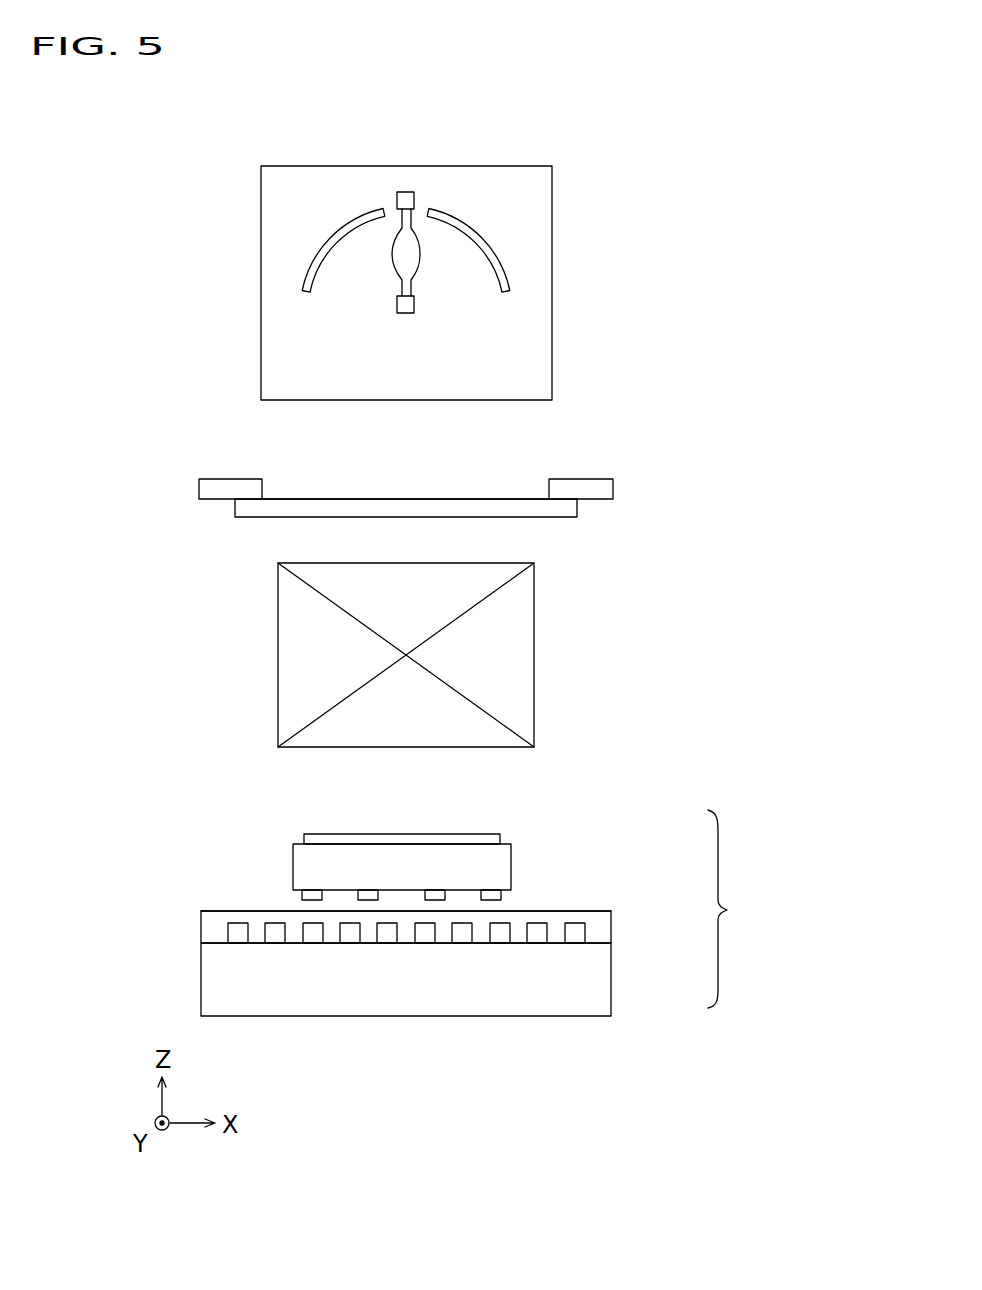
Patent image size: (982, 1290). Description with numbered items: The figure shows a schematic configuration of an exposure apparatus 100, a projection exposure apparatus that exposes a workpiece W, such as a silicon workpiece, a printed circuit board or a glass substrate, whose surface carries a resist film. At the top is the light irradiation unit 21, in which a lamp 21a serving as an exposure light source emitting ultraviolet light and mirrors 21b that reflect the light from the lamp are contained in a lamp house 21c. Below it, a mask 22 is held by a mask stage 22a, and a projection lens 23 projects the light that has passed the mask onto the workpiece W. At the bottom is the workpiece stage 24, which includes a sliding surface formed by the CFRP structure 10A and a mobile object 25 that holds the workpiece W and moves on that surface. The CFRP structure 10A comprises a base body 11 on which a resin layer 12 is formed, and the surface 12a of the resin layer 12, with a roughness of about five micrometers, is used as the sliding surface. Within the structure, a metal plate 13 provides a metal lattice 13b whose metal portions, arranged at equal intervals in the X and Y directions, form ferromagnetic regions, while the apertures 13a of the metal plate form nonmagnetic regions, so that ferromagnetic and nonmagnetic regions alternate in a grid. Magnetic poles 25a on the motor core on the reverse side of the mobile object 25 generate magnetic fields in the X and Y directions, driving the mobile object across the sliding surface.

The exposure apparatus 100 is at (622, 148).
The light irradiation unit 21 is at (240, 203).
The lamp 21a is at (390, 260).
The mirrors 21b is at (498, 267).
The lamp house 21c is at (552, 248).
The mask 22 is at (517, 499).
The mask stage 22a is at (597, 479).
The projection lens 23 is at (534, 692).
The workpiece W is at (488, 833).
The mobile object 25 is at (511, 870).
The magnetic poles 25a is at (302, 895).
The workpiece stage 24 is at (738, 909).
The CFRP structure 10A is at (183, 933).
The resin layer 12 is at (611, 928).
The surface of the resin layer 12a is at (230, 908).
The base plate 11 is at (611, 990).
The metal plate 13 is at (575, 920).
The apertures 13a is at (483, 935).
The metal lattice 13b is at (390, 935).